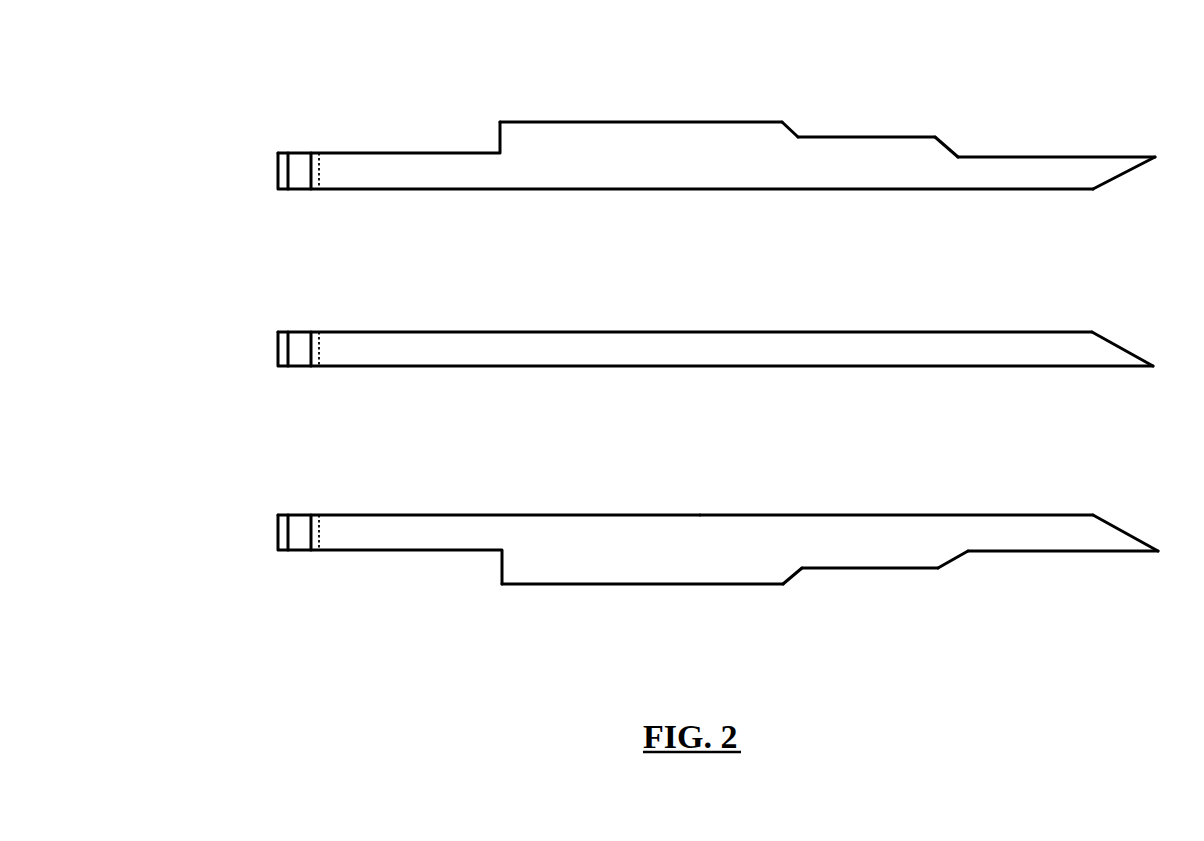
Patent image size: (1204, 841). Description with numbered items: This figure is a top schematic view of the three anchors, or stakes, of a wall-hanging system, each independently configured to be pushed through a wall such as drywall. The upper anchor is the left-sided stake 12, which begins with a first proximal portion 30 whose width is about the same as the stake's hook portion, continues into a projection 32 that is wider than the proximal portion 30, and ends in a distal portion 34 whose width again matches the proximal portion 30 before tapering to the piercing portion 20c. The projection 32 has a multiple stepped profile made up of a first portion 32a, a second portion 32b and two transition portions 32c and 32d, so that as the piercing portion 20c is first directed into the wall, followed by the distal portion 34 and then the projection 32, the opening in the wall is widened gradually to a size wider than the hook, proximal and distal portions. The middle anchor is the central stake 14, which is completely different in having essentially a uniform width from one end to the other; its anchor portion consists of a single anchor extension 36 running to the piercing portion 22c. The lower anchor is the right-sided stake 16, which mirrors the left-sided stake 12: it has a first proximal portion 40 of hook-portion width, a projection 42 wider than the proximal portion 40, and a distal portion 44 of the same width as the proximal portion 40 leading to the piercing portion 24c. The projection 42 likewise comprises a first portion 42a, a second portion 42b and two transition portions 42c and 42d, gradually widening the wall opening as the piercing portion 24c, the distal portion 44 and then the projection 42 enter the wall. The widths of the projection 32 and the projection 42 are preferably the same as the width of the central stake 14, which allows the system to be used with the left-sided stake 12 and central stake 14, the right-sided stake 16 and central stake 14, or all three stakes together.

The left-sided stake 12 is at (277, 170).
The first proximal portion 30 is at (398, 170).
The projection 32 is at (561, 120).
The first portion 32a is at (672, 118).
The second portion 32b is at (878, 137).
The transition portion 32c is at (793, 125).
The transition portion 32d is at (948, 147).
The distal portion 34 is at (1020, 172).
The piercing portion 20c is at (1140, 152).
The central stake 14 is at (277, 347).
The anchor extension 36 is at (597, 348).
The piercing portion 22c is at (1127, 352).
The right-sided stake 16 is at (277, 530).
The first proximal portion 40 is at (402, 537).
The projection 42 is at (543, 585).
The first portion 42a is at (663, 582).
The second portion 42b is at (842, 565).
The transition portion 42c is at (800, 583).
The transition portion 42d is at (953, 570).
The distal portion 44 is at (1017, 535).
The piercing portion 24c is at (1130, 535).